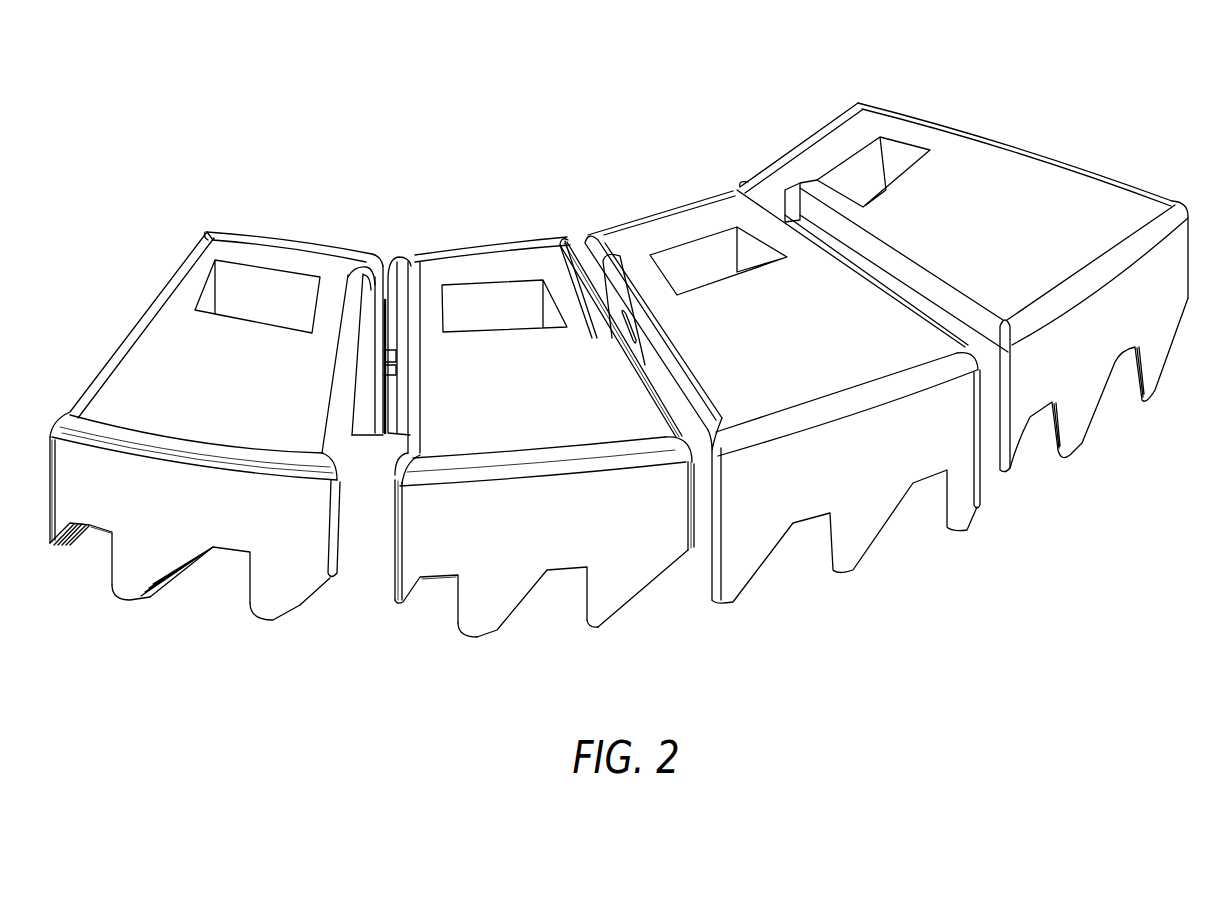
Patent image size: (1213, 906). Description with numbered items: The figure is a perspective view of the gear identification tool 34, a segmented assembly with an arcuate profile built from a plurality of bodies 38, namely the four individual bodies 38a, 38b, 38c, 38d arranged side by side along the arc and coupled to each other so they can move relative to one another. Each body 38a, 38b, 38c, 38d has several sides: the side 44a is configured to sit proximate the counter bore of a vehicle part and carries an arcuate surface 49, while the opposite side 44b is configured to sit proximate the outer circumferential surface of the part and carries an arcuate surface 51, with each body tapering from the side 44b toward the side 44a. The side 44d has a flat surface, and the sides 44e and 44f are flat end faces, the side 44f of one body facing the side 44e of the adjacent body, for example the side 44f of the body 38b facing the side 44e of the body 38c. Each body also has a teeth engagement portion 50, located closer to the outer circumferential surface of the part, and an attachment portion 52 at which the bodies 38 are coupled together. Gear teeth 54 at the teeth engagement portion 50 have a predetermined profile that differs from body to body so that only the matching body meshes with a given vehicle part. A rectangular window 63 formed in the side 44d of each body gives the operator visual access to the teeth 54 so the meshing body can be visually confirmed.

The gear identification tool 34 is at (396, 90).
The bodies 38 is at (717, 183).
The body 38a is at (223, 212).
The body 38b is at (517, 218).
The body 38c is at (697, 185).
The body 38d is at (1012, 133).
The side 44a is at (343, 248).
The side 44b is at (158, 518).
The side 44d is at (160, 380).
The side 44e is at (395, 453).
The side 44f is at (160, 282).
The arcuate surface 49 is at (290, 252).
The teeth engagement portion 50 is at (250, 413).
The arcuate surface 51 is at (105, 477).
The attachment portion 52 is at (215, 245).
The gear teeth 54 is at (150, 580).
The window 63 is at (253, 287).